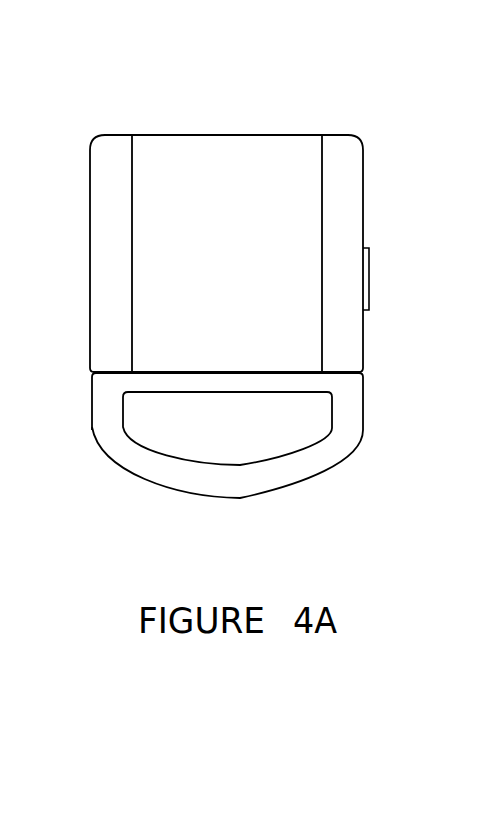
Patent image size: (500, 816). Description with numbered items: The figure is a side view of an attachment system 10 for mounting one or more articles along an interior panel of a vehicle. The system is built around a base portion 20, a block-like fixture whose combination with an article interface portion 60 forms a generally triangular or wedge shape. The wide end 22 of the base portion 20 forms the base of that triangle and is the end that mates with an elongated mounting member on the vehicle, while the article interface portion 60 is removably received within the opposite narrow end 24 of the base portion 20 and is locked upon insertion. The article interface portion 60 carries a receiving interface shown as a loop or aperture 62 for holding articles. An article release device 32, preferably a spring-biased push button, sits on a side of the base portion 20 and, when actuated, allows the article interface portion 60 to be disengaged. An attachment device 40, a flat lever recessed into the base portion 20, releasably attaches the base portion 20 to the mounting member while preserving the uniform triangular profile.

The attachment system 10 is at (82, 98).
The base portion 20 is at (100, 198).
The wide end 22 is at (376, 148).
The narrow end 24 is at (378, 370).
The article release device 32 is at (370, 270).
The attachment device 40 is at (148, 290).
The article interface portion 60 is at (352, 430).
The loop or aperture 62 is at (160, 427).